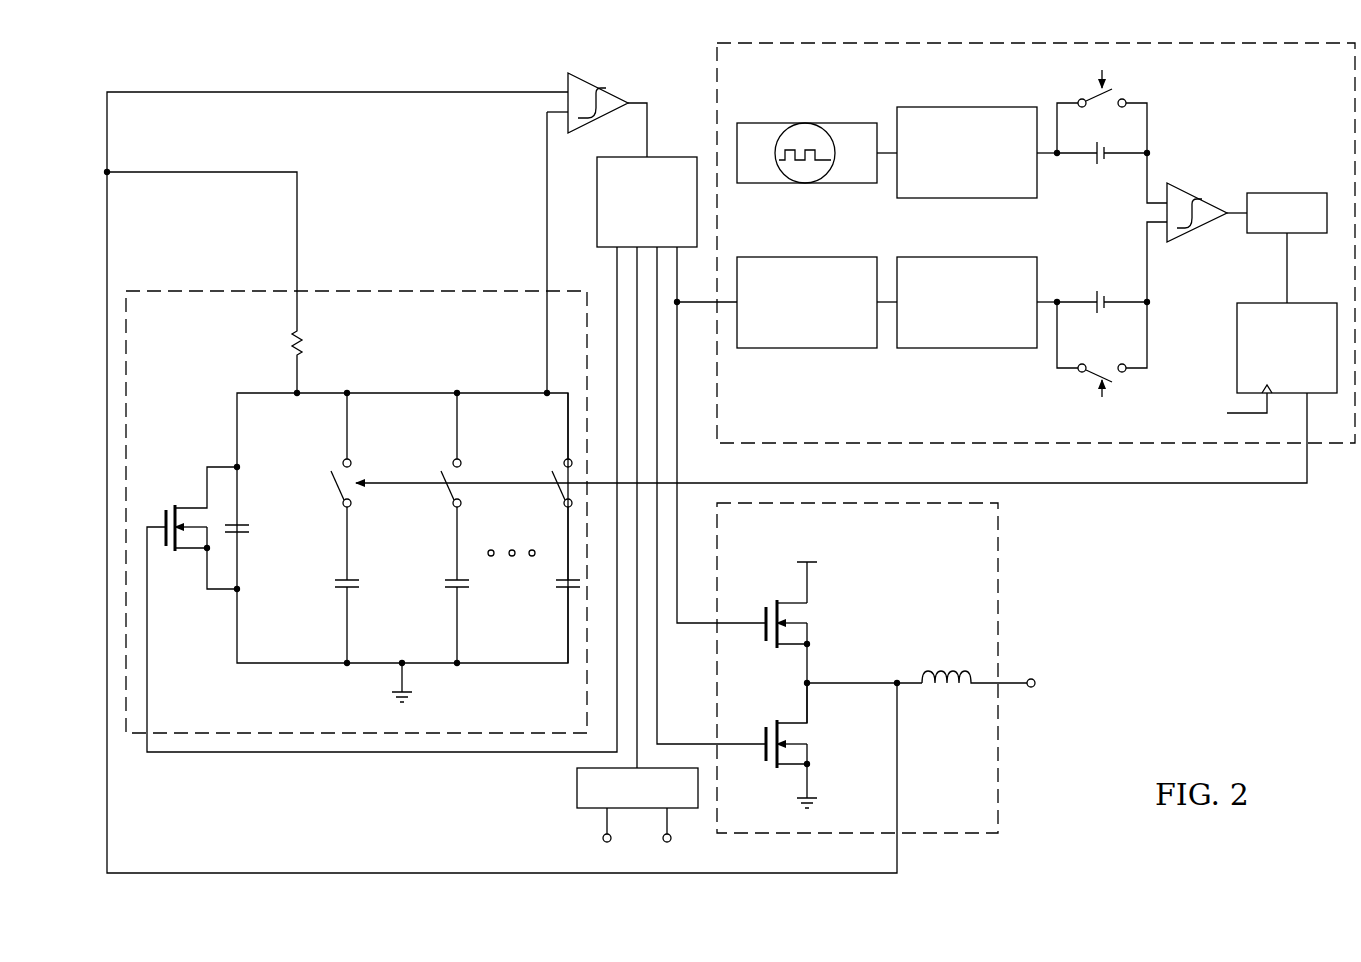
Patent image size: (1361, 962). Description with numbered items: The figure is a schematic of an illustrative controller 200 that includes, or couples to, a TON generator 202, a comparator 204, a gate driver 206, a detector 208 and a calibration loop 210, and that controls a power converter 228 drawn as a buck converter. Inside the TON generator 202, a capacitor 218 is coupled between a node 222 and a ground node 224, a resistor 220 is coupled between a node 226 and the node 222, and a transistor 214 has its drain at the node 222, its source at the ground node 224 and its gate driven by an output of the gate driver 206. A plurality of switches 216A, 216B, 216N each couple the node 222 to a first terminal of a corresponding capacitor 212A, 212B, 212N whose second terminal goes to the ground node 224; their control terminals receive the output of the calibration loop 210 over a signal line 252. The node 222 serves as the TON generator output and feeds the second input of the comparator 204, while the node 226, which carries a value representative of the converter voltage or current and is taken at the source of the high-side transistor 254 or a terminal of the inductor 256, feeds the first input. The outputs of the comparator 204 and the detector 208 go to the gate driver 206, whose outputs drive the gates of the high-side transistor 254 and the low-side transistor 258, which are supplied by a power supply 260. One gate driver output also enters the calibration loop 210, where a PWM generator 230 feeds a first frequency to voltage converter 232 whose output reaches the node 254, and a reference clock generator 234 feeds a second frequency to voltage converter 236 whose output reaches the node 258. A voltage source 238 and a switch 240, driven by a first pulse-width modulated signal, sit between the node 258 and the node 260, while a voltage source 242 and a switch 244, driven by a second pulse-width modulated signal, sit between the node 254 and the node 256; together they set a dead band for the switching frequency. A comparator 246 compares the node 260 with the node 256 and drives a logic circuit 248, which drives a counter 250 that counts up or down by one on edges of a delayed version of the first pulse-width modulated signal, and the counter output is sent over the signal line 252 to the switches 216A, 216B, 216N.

The controller 200 is at (1178, 680).
The TON generator 202 is at (247, 283).
The comparator 204 is at (598, 86).
The gate driver 206 is at (660, 156).
The detector 208 is at (576, 792).
The calibration loop 210 is at (1282, 105).
The capacitor 212A is at (333, 583).
The capacitor 212B is at (443, 583).
The capacitor 212N is at (554, 583).
The transistor 214 is at (160, 508).
The switch 216A is at (341, 500).
The switch 216B is at (451, 500).
The switch 216N is at (562, 500).
The capacitor 218 is at (253, 529).
The resistor 220 is at (286, 342).
The node 222 is at (348, 388).
The ground node 224 is at (395, 702).
The node 226 is at (112, 168).
The power converter 228 is at (1004, 583).
The pulse width modulation generator 230 is at (807, 350).
The first frequency to voltage converter 232 is at (965, 350).
The reference clock generator 234 is at (806, 184).
The second frequency to voltage converter 236 is at (965, 200).
The voltage source 238 is at (1101, 168).
The switch 240 is at (1095, 92).
The voltage source 242 is at (1100, 288).
The switch 244 is at (1102, 370).
The comparator 246 is at (1198, 198).
The logic circuit 248 is at (1305, 192).
The counter 250 is at (1305, 302).
The signal line 252 is at (1023, 487).
The high-side transistor / node 254 is at (1062, 290).
The inductor / node 256 is at (1154, 296).
The low-side transistor / node 258 is at (1055, 162).
The power supply / node 260 is at (1154, 146).